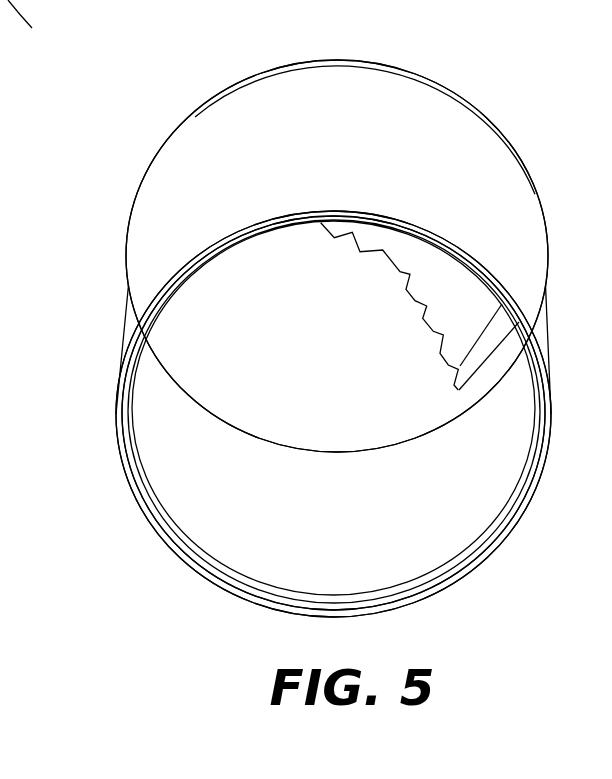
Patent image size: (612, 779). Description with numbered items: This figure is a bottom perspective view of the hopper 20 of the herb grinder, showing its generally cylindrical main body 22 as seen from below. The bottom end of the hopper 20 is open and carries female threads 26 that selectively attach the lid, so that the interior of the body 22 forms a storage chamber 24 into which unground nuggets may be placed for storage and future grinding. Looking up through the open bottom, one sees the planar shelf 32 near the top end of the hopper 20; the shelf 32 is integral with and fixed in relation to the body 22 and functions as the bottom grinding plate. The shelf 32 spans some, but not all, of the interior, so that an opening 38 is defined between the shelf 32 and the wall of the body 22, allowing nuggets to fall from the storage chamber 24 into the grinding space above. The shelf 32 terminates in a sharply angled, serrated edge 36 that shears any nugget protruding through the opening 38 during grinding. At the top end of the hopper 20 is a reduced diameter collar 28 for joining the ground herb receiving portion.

The hopper 20 is at (452, 63).
The main body 22 is at (150, 240).
The storage chamber 24 is at (172, 465).
The female threads 26 is at (210, 558).
The reduced diameter collar 28 is at (370, 60).
The planar shelf 32 is at (177, 330).
The edge 36 is at (403, 268).
The opening 38 is at (462, 316).